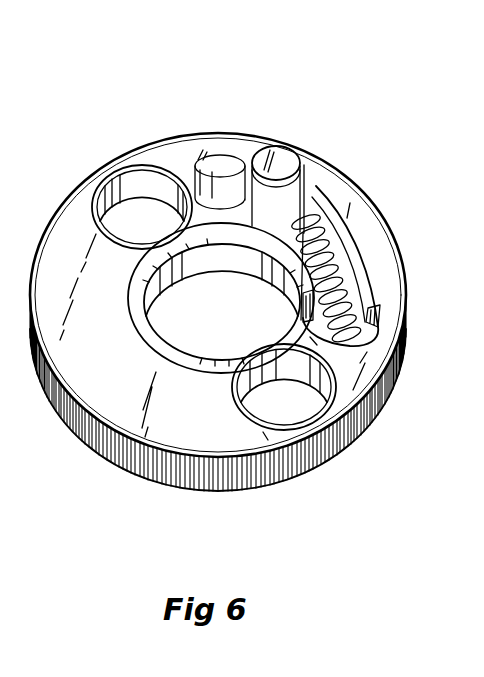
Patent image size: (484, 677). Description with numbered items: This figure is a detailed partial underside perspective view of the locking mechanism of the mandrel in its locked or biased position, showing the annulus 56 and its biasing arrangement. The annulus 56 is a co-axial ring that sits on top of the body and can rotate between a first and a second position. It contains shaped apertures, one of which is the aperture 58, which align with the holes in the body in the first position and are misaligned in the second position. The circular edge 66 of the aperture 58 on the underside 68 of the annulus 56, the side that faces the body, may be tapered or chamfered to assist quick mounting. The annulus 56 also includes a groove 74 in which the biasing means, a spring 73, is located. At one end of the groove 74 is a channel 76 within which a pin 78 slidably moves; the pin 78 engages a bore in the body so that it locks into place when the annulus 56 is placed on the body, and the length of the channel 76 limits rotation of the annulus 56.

The annulus 56 is at (91, 452).
The aperture 58 is at (140, 217).
The circular edge 66 is at (119, 167).
The underside 68 is at (112, 377).
The spring 73 is at (364, 287).
The groove 74 is at (360, 288).
The channel 76 is at (300, 240).
The pin 78 is at (282, 150).